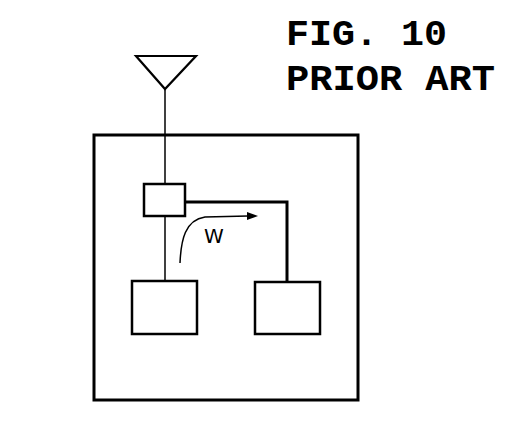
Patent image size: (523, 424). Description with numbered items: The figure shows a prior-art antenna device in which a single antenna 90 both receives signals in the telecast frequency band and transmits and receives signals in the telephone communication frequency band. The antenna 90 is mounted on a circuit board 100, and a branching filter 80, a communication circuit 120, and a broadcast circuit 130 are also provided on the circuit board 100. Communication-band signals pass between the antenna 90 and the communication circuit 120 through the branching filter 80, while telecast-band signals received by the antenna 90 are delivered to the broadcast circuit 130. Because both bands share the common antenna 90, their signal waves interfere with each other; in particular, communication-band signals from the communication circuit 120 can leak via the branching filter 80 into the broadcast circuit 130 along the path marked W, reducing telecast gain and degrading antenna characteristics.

The antenna 90 is at (155, 68).
The branching filter 80 is at (152, 199).
The circuit board 100 is at (358, 203).
The communication circuit 120 is at (143, 307).
The broadcast circuit 130 is at (310, 305).